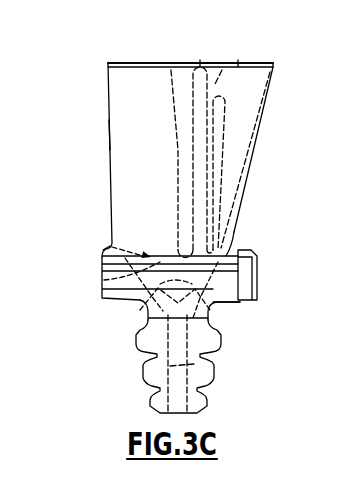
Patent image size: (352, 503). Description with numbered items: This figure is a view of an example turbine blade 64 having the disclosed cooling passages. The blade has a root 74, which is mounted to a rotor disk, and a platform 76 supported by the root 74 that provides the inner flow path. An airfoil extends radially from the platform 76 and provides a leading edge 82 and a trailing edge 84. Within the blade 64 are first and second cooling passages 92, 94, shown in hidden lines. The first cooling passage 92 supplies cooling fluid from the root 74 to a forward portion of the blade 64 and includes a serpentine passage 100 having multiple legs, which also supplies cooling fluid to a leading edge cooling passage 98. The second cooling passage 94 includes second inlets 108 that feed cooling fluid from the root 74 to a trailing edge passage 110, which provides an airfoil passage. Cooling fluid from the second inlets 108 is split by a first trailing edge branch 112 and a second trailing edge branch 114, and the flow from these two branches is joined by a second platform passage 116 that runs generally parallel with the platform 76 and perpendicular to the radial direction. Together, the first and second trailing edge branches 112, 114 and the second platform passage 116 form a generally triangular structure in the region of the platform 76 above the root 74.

The turbine blade 64 is at (104, 110).
The root 74 is at (145, 368).
The platform 76 is at (233, 248).
The leading edge 82 is at (268, 87).
The trailing edge 84 is at (111, 88).
The first cooling passage 92 is at (252, 155).
The second cooling passage 94 is at (126, 167).
The leading edge cooling passage 98 is at (260, 98).
The serpentine passage 100 is at (221, 65).
The second inlets 108 is at (213, 367).
The trailing edge passage 110 is at (125, 127).
The first trailing edge branch 112 is at (146, 303).
The second trailing edge branch 114 is at (215, 306).
The second platform passage 116 is at (103, 280).